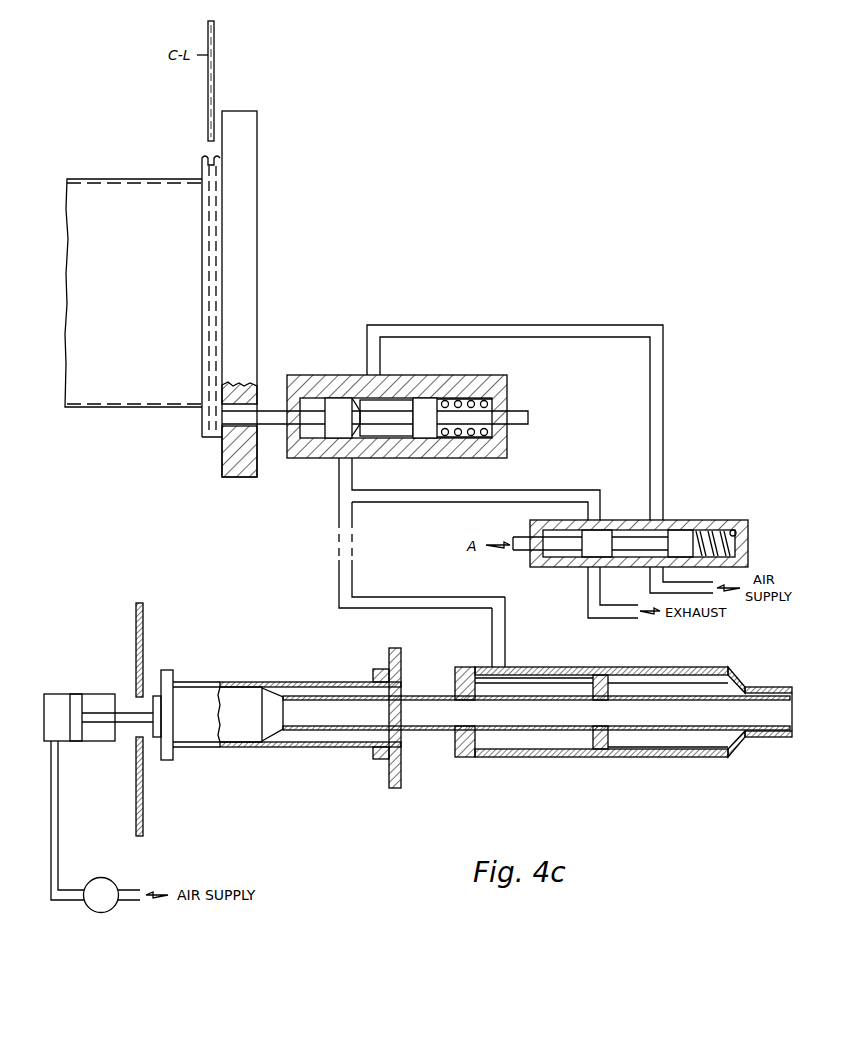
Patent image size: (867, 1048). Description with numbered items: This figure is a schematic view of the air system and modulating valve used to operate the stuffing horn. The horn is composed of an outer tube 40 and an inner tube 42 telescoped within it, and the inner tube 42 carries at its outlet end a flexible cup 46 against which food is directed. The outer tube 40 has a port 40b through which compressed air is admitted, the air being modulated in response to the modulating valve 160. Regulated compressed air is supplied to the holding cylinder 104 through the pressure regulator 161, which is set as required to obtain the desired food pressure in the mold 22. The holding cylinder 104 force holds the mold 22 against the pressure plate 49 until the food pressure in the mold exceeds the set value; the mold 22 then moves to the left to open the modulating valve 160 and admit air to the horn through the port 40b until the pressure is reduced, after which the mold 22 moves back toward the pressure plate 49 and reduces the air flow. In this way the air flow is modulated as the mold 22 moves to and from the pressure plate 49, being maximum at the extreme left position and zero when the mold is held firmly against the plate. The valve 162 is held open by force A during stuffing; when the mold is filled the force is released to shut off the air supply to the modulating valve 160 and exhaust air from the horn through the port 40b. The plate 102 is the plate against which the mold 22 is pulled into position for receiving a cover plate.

The mold 22 is at (128, 165).
The pressure plate 49 is at (258, 248).
The modulating valve 160 is at (331, 356).
The valve 162 is at (689, 520).
The plate 102 is at (136, 626).
The holding cylinder 104 is at (55, 694).
The pressure regulator 161 is at (116, 882).
The flexible cup 46 is at (268, 722).
The inner tube 42 is at (308, 732).
The outer tube 40 is at (645, 758).
The port 40b is at (506, 666).